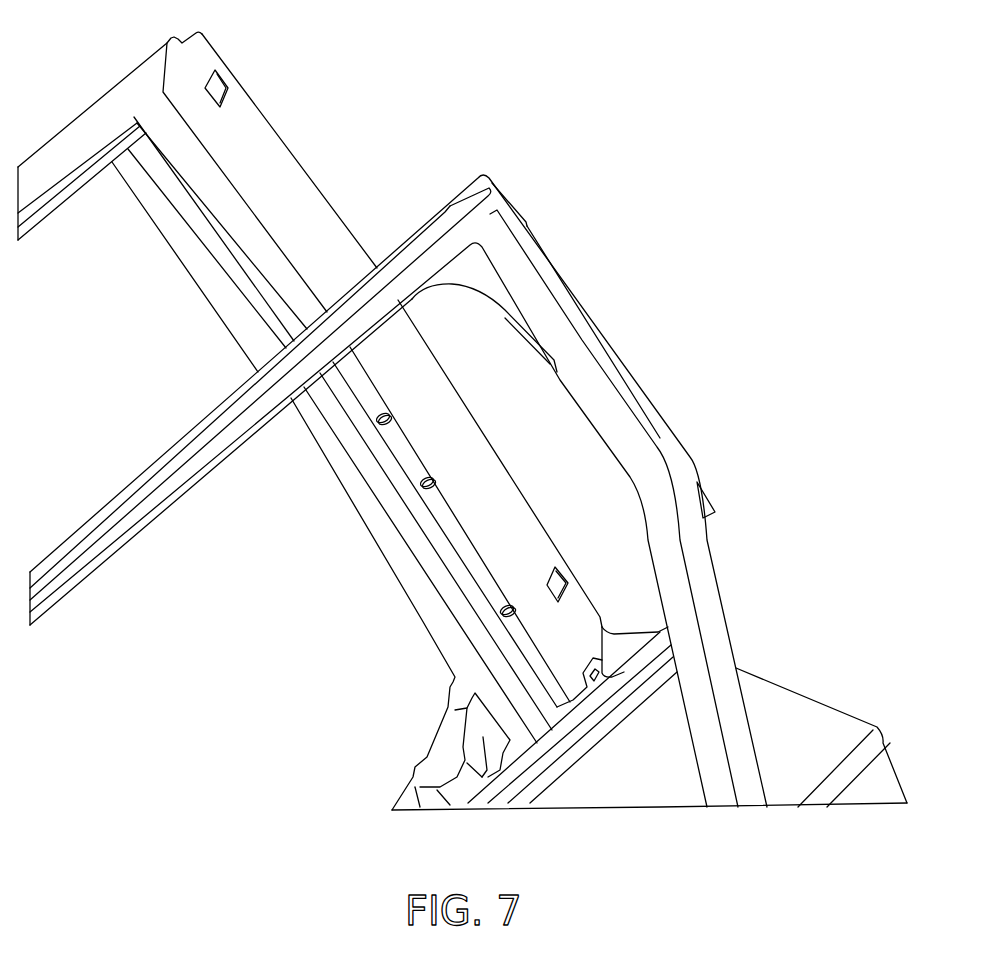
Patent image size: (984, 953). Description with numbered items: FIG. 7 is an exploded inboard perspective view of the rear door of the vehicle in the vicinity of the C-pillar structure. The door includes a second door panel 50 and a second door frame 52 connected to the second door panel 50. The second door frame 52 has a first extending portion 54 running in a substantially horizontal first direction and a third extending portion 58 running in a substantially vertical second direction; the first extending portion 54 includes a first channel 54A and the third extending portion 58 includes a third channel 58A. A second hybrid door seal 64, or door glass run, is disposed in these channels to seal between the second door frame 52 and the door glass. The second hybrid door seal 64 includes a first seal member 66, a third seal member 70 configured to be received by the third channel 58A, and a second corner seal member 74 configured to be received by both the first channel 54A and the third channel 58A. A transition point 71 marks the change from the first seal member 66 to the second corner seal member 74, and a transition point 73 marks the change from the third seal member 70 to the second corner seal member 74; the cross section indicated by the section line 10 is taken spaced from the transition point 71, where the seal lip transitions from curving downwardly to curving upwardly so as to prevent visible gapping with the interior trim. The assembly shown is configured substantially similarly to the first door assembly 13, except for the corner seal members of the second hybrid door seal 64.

The first door assembly 13 is at (175, 748).
The section view indicator 10 is at (435, 170).
The second door panel 50 is at (793, 727).
The second door frame 52 is at (106, 88).
The first extending portion 54 is at (47, 147).
The first channel 54A is at (53, 213).
The third extending portion 58 is at (300, 158).
The third channel 58A is at (245, 290).
The second hybrid door seal 64 is at (652, 387).
The first seal member 66 is at (133, 475).
The third seal member 70 is at (727, 572).
The transition point 71 is at (356, 298).
The transition point 73 is at (583, 296).
The second corner seal member 74 is at (437, 297).